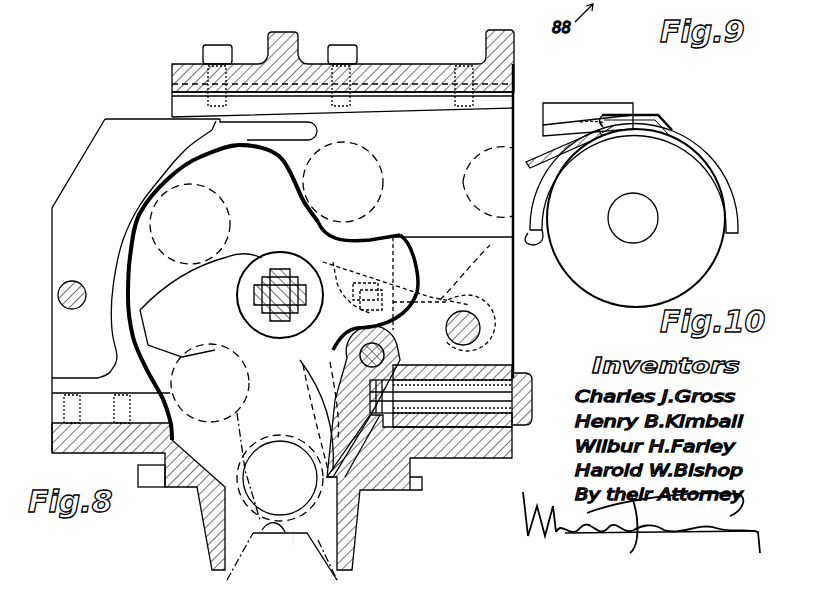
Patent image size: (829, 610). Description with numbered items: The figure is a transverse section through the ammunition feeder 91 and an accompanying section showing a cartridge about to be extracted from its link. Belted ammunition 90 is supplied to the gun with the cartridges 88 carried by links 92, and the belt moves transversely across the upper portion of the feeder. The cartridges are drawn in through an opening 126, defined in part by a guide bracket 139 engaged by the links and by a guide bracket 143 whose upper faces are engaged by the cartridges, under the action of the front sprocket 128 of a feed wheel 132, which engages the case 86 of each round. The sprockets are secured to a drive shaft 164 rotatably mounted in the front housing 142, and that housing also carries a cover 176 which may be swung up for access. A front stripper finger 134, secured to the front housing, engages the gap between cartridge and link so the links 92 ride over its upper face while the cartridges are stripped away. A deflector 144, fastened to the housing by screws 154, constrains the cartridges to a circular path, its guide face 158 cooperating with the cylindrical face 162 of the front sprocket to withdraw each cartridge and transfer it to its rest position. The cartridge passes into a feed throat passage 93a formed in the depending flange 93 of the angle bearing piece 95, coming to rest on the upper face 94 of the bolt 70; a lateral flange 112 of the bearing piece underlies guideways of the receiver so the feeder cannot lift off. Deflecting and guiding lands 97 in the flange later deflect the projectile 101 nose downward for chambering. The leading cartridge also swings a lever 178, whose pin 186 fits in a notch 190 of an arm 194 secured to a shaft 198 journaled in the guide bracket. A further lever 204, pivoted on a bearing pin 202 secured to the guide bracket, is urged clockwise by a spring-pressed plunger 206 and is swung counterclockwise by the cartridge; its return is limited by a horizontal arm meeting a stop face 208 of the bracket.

In FIG. 8, the bolt 70 is at (227, 580).
In FIG. 8, the case 86 is at (280, 496).
In FIG. 10, the case 86 is at (564, 276).
In FIG. 8, the cartridges 88 is at (448, 183).
In FIG. 10, the cartridges 88 is at (596, 313).
In FIG. 10, the belted ammunition 90 is at (662, 99).
In FIG. 8, the feeder 91 is at (382, 42).
In FIG. 10, the links 92 is at (712, 152).
In FIG. 8, the depending flange 93 is at (208, 528).
In FIG. 8, the feed throat passage 93a is at (212, 565).
In FIG. 8, the upper face of the bolt 94 is at (296, 545).
In FIG. 8, the angle bearing piece 95 is at (196, 490).
In FIG. 8, the cartridge deflecting and guiding lands 97 is at (271, 540).
In FIG. 8, the projectile 101 is at (150, 185).
In FIG. 8, the lateral flange 112 is at (424, 484).
In FIG. 8, the opening 126 is at (426, 115).
In FIG. 8, the front sprocket 128 is at (165, 338).
In FIG. 8, the feed wheel 132 is at (128, 254).
In FIG. 10, the front stripper finger 134 is at (583, 102).
In FIG. 8, the guide bracket 139 is at (497, 105).
In FIG. 8, the front housing 142 is at (516, 70).
In FIG. 8, the guide bracket 143 is at (436, 239).
In FIG. 8, the deflector 144 is at (312, 183).
In FIG. 8, the screws 154 is at (95, 395).
In FIG. 8, the guide face 158 is at (140, 278).
In FIG. 8, the cylindrical face 162 is at (236, 236).
In FIG. 8, the drive shaft 164 is at (262, 297).
In FIG. 8, the cover 176 is at (388, 64).
In FIG. 8, the lever 178 is at (313, 433).
In FIG. 8, the pin 186 is at (368, 282).
In FIG. 8, the notch 190 is at (396, 281).
In FIG. 8, the arm 194 is at (468, 272).
In FIG. 8, the shaft 198 is at (466, 322).
In FIG. 8, the bearing pin 202 is at (359, 395).
In FIG. 8, the lever 204 is at (340, 432).
In FIG. 8, the spring-pressed plunger 206 is at (412, 466).
In FIG. 8, the stop face 208 is at (423, 356).